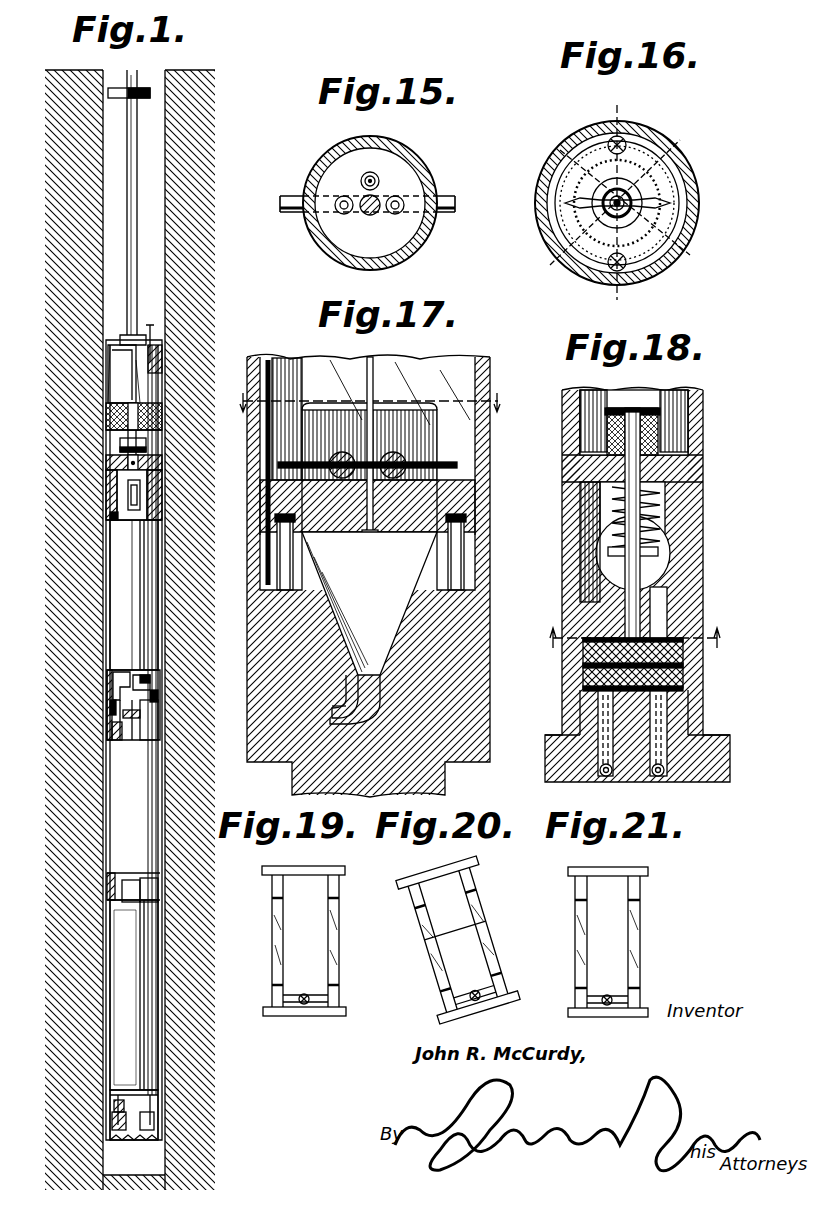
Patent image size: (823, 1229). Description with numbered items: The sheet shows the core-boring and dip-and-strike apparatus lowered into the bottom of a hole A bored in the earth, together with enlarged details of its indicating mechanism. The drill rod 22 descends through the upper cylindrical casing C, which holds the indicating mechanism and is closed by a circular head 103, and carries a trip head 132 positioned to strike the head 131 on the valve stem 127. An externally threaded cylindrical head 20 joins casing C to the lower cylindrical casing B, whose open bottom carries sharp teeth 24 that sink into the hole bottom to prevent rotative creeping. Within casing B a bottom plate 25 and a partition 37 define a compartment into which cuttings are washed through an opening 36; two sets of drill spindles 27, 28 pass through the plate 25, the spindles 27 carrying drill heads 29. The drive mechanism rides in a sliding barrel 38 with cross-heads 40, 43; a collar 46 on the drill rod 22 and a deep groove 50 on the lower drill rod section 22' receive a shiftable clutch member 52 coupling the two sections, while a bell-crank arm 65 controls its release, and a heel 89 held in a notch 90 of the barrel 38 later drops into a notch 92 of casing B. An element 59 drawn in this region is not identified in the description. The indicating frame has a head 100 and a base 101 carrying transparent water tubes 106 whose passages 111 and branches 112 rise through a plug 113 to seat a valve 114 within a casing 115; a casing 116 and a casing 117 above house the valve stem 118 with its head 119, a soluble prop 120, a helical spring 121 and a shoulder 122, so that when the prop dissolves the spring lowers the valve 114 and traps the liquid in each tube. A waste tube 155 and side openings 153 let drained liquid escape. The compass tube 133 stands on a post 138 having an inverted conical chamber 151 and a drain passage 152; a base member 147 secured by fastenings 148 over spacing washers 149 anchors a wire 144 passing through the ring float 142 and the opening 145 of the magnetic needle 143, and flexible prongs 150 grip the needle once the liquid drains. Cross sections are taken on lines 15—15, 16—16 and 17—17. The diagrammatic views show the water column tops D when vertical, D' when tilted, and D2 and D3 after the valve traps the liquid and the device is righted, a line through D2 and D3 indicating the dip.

In FIG. 1, the trip head 132 is at (110, 93).
In FIG. 1, the hole A is at (152, 198).
In FIG. 1, the drill rod 22 is at (182, 272).
In FIG. 1, the head 131 is at (148, 338).
In FIG. 1, the circular head 103 is at (152, 346).
In FIG. 1, the valve stem 127 is at (162, 358).
In FIG. 1, the upper cylindrical casing C is at (122, 376).
In FIG. 1, the cylindrical head 20 is at (112, 430).
In FIG. 1, the valve 59 is at (148, 456).
In FIG. 1, the shiftable clutch member 52 is at (150, 476).
In FIG. 1, the collar 46 is at (126, 486).
In FIG. 1, the cross-head 40 is at (150, 493).
In FIG. 1, the cylindrical sleeve or barrel 38 is at (114, 511).
In FIG. 1, the diametric groove 50 is at (150, 511).
In FIG. 1, the lower drill rod section 22' is at (90, 595).
In FIG. 1, the lower cylindrical casing B is at (124, 598).
In FIG. 1, the notch 90 is at (112, 672).
In FIG. 1, the heel 89 is at (110, 688).
In FIG. 1, the drill spindles 27 is at (118, 738).
In FIG. 1, the bell crank arm 65 is at (156, 670).
In FIG. 1, the cross-head 43 is at (142, 720).
In FIG. 1, the drill spindles 28 is at (160, 736).
In FIG. 1, the notch 92 is at (110, 890).
In FIG. 1, the partition 37 is at (132, 913).
In FIG. 1, the bottom plate 25 is at (160, 1100).
In FIG. 1, the drill heads 29 is at (114, 1118).
In FIG. 1, the opening 36 is at (156, 1117).
In FIG. 1, the teeth 24 is at (128, 1140).
In FIG. 15, the plug 113 is at (357, 143).
In FIG. 18, the plug 113 is at (580, 728).
In FIG. 15, the waste tube 155 is at (373, 178).
In FIG. 18, the waste tube 155 is at (600, 584).
In FIG. 15, the passage 152 is at (288, 198).
In FIG. 17, the passage 152 is at (330, 710).
In FIG. 15, the opening 153 is at (438, 232).
In FIG. 18, the opening 153 is at (582, 566).
In FIG. 15, the valve stem 118 is at (372, 215).
In FIG. 18, the valve stem 118 is at (642, 574).
In FIG. 16, the fastenings 148 is at (598, 134).
In FIG. 17, the fastenings 148 is at (262, 530).
In FIG. 16, the prongs 150 is at (585, 170).
In FIG. 17, the prongs 150 is at (390, 418).
In FIG. 16, the opening 145 is at (608, 202).
In FIG. 16, the float body 142 is at (634, 183).
In FIG. 17, the float body 142 is at (440, 456).
In FIG. 16, the magnetic needle 143 is at (628, 195).
In FIG. 17, the magnetic needle 143 is at (448, 468).
In FIG. 16, the upright tube 133 is at (699, 204).
In FIG. 17, the upright tube 133 is at (478, 360).
In FIG. 16, the base member 147 is at (672, 225).
In FIG. 17, the base member 147 is at (372, 538).
In FIG. 16, the spacing elements 149 is at (688, 256).
In FIG. 17, the spacing elements 149 is at (262, 562).
In FIG. 16, the wire 144 is at (572, 242).
In FIG. 17, the wire 144 is at (374, 372).
In FIG. 16, the section line 17— 17 is at (616, 201).
In FIG. 17, the section line 16— 16 is at (369, 402).
In FIG. 18, the section line 15— 15 is at (638, 638).
In FIG. 17, the inverted conical chamber 151 is at (369, 603).
In FIG. 17, the post 138 is at (262, 623).
In FIG. 18, the post 138 is at (578, 622).
In FIG. 18, the base 101 is at (547, 766).
In FIG. 19, the base 101 is at (296, 1018).
In FIG. 20, the base 101 is at (440, 1020).
In FIG. 21, the base 101 is at (650, 1008).
In FIG. 18, the casing 117 is at (586, 396).
In FIG. 18, the head 119 is at (638, 406).
In FIG. 18, the soluble member 120 is at (660, 430).
In FIG. 18, the casing 116 is at (665, 506).
In FIG. 18, the helical spring 121 is at (662, 518).
In FIG. 18, the shoulder 122 is at (658, 552).
In FIG. 18, the valve 114 is at (600, 661).
In FIG. 19, the valve 114 is at (300, 993).
In FIG. 20, the valve 114 is at (470, 992).
In FIG. 21, the valve 114 is at (612, 996).
In FIG. 18, the cylindrical casing 115 is at (600, 694).
In FIG. 18, the branch 112 is at (660, 704).
In FIG. 18, the passage 111 is at (658, 778).
In FIG. 19, the head 100 is at (336, 868).
In FIG. 20, the head 100 is at (474, 862).
In FIG. 21, the head 100 is at (650, 870).
In FIG. 19, the tubes 106 is at (332, 922).
In FIG. 20, the tubes 106 is at (478, 905).
In FIG. 21, the tubes 106 is at (638, 903).
In FIG. 19, the tops of water columns D is at (285, 941).
In FIG. 20, the tops of water columns D' is at (463, 940).
In FIG. 21, the top of water column D2 is at (582, 923).
In FIG. 21, the top of water column D3 is at (640, 954).